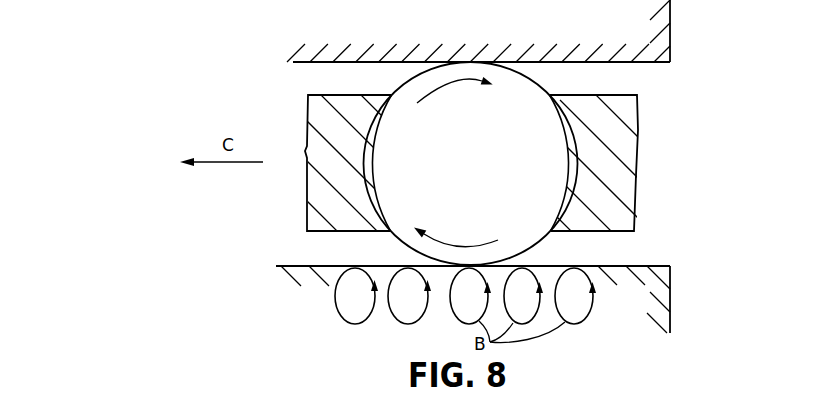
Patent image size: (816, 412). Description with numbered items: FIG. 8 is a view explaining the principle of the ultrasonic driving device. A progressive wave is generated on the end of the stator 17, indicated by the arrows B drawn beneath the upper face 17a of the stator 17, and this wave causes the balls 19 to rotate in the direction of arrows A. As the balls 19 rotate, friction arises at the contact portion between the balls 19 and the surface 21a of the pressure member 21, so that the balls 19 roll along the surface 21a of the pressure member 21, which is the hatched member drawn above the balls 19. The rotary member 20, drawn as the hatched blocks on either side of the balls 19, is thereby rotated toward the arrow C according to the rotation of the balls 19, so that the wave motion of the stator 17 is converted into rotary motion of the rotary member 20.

The stator 17 is at (670, 298).
The upper surface of lower plate 17a is at (628, 266).
The balls 19 is at (502, 80).
The rotary member 20 is at (633, 150).
The pressure member 21 is at (670, 23).
The surface of the pressure member 21a is at (642, 62).